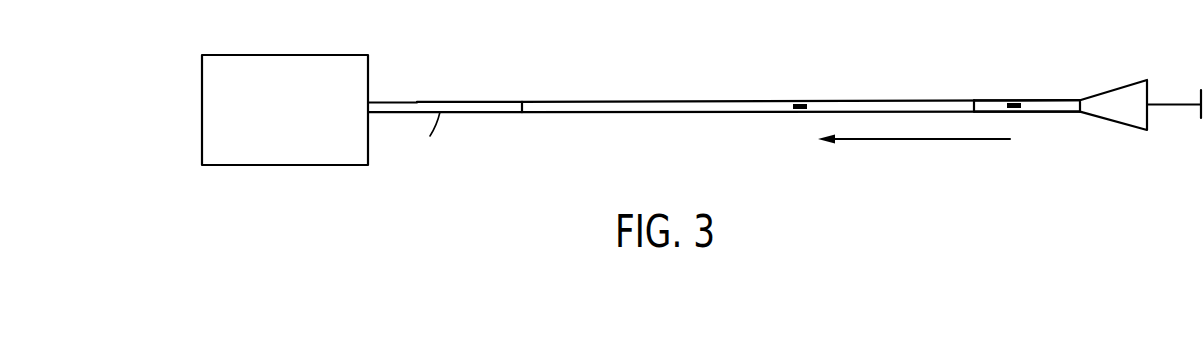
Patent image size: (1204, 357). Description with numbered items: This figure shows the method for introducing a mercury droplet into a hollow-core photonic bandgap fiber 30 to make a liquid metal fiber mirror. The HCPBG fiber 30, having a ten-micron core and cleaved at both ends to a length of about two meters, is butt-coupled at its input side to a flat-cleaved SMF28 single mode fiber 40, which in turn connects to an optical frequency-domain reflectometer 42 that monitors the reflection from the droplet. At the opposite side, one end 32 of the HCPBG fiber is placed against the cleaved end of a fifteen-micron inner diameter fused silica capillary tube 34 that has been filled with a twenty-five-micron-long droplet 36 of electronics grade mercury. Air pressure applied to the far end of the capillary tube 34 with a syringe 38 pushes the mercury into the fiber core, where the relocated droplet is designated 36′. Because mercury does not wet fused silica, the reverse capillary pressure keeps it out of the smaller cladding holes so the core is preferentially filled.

The hollow-core photonic bandgap fiber 30 is at (660, 112).
The end of the HCPBG fiber 32 is at (974, 100).
The fused silica capillary tube 34 is at (1047, 100).
The mercury droplet 36 is at (1014, 103).
The mercury droplet in new position 36′ is at (798, 104).
The syringe 38 is at (1140, 130).
The single mode fiber 40 is at (465, 102).
The optical frequency-domain reflectometer 42 is at (275, 165).